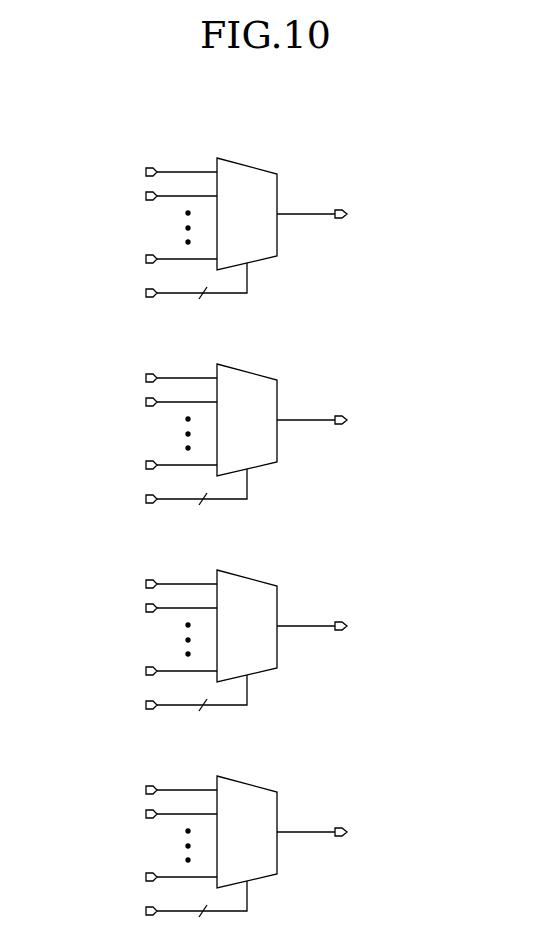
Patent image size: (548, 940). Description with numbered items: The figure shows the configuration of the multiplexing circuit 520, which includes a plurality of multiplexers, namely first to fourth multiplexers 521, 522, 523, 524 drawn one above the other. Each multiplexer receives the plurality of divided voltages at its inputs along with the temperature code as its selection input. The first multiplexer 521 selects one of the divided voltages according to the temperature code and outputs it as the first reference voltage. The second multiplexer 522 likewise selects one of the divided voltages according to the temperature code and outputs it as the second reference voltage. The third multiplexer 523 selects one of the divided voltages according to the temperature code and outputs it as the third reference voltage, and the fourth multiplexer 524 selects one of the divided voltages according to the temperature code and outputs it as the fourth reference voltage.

The multiplexing circuit 520 is at (410, 108).
The first multiplexer 521 is at (243, 166).
The second multiplexer 522 is at (243, 372).
The third multiplexer 523 is at (243, 578).
The fourth multiplexer 524 is at (243, 784).